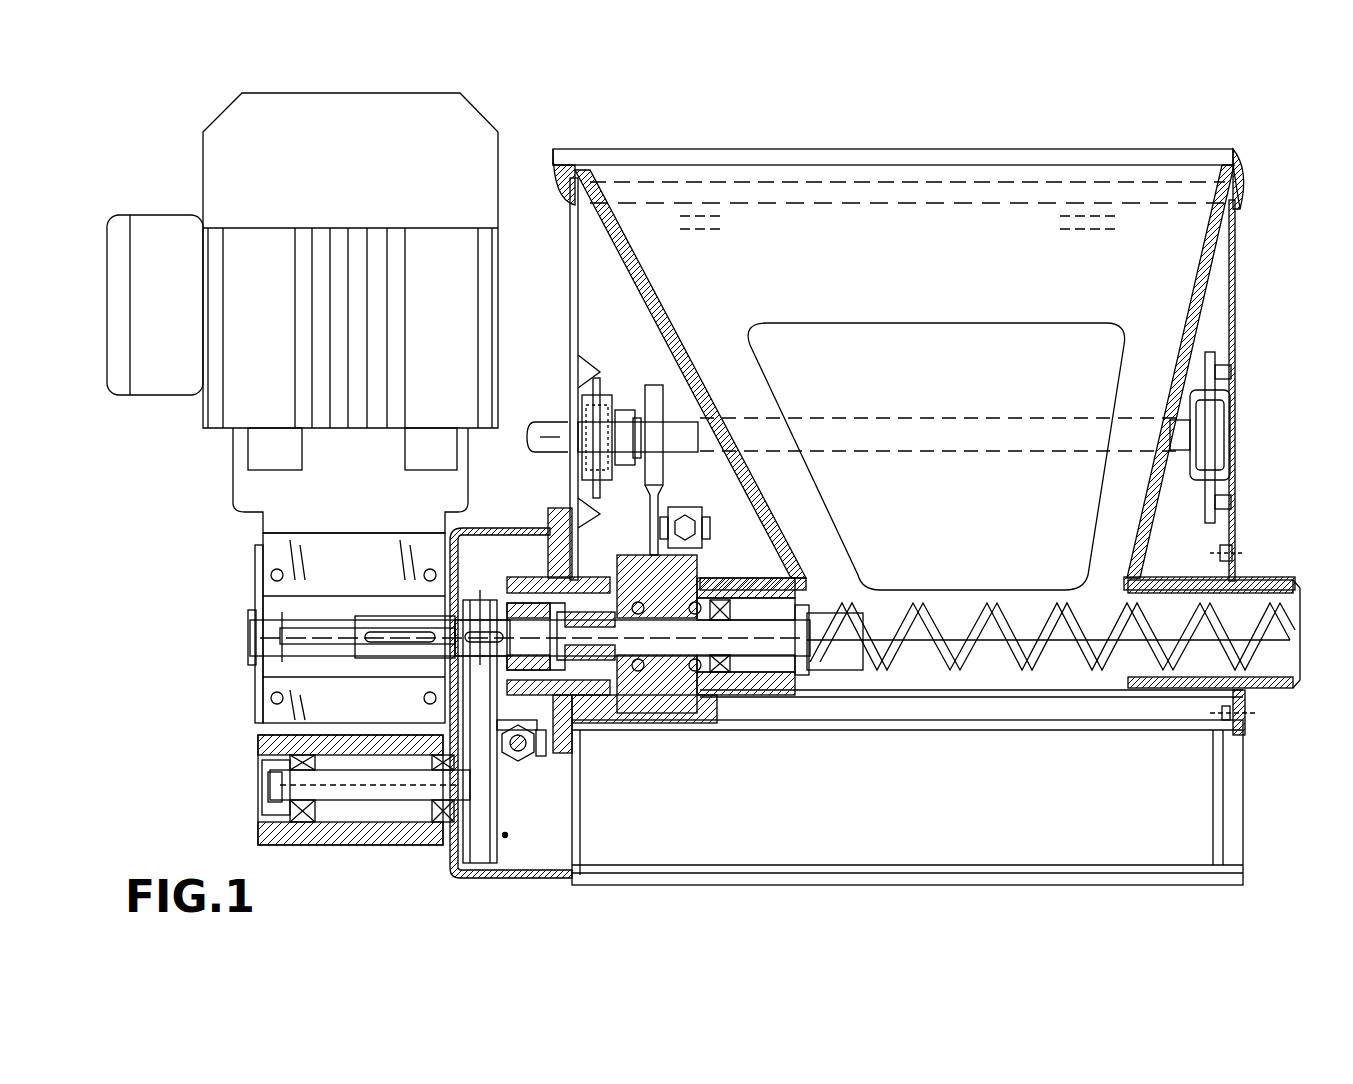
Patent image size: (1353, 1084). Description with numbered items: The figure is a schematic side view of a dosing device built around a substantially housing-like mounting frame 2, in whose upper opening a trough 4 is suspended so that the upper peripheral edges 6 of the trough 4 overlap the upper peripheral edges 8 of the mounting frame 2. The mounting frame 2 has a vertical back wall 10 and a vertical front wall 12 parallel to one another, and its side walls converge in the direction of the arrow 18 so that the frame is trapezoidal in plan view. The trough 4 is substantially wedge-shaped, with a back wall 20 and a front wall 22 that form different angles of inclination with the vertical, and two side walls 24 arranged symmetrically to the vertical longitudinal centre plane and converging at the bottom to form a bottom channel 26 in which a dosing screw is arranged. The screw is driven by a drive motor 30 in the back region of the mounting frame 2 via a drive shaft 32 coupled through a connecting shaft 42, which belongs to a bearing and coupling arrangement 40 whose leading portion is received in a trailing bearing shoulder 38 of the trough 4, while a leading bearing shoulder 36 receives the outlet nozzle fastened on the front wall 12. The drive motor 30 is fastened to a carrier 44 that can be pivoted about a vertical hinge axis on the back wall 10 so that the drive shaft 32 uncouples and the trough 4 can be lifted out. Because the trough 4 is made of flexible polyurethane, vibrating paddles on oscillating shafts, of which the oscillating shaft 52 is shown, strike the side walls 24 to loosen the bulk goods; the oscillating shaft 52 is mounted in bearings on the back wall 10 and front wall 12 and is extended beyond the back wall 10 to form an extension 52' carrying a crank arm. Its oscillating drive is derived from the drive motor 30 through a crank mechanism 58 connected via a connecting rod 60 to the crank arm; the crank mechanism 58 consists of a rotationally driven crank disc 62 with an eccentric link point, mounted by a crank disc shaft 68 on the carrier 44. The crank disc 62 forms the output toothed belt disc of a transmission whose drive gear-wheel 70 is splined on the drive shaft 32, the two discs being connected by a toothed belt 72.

The mounting frame 2 is at (1242, 320).
The trough 4 is at (1072, 155).
The upper peripheral edges of the trough 6 is at (1240, 165).
The upper peripheral edges of the mounting frame 8 is at (1240, 212).
The back wall 10 is at (558, 268).
The front wall 12 is at (1236, 265).
The arrow 18 is at (940, 262).
The back wall of the trough 20 is at (640, 300).
The front wall of the trough 22 is at (1185, 300).
The side walls of the trough 24 is at (1032, 281).
The bottom channel 26 is at (972, 600).
The drive motor 30 is at (360, 165).
The drive shaft 32 is at (515, 600).
The leading bearing shoulder 36 is at (1150, 578).
The trailing bearing shoulder 38 is at (740, 578).
The bearing and coupling arrangement 40 is at (648, 728).
The connecting shaft 42 is at (672, 640).
The carrier 44 is at (450, 860).
The oscillating shaft 52 is at (879, 423).
The extension 52' is at (539, 400).
The crank mechanism 58 is at (506, 836).
The connecting rod 60 is at (522, 765).
The crank disc 62 is at (480, 845).
The crank disc shaft 68 is at (330, 785).
The drive gear-wheel 70 is at (483, 605).
The toothed belt 72 is at (428, 690).